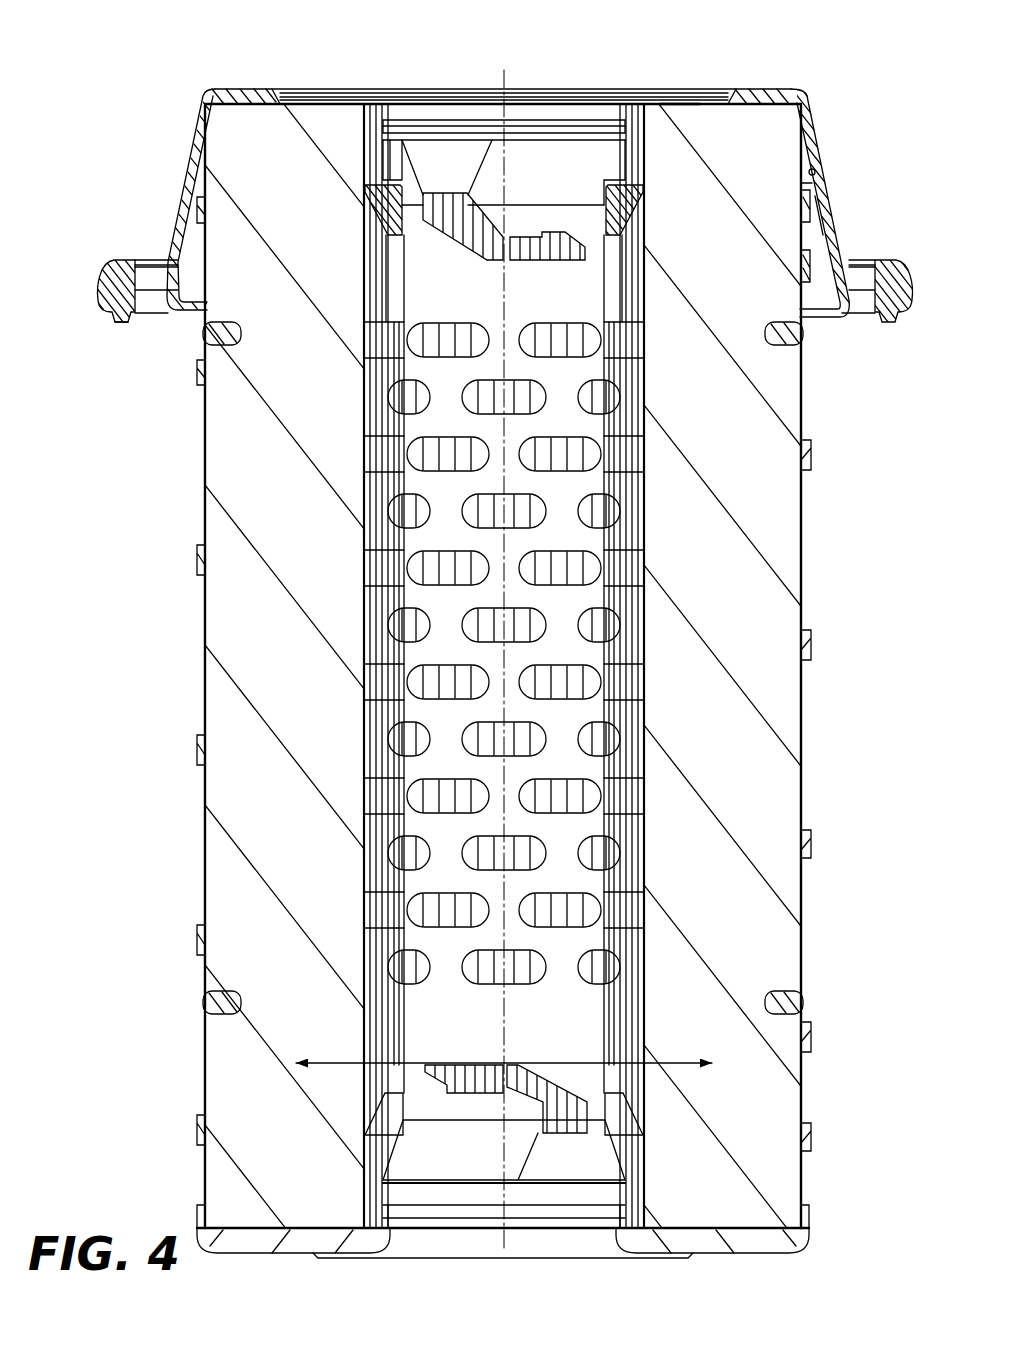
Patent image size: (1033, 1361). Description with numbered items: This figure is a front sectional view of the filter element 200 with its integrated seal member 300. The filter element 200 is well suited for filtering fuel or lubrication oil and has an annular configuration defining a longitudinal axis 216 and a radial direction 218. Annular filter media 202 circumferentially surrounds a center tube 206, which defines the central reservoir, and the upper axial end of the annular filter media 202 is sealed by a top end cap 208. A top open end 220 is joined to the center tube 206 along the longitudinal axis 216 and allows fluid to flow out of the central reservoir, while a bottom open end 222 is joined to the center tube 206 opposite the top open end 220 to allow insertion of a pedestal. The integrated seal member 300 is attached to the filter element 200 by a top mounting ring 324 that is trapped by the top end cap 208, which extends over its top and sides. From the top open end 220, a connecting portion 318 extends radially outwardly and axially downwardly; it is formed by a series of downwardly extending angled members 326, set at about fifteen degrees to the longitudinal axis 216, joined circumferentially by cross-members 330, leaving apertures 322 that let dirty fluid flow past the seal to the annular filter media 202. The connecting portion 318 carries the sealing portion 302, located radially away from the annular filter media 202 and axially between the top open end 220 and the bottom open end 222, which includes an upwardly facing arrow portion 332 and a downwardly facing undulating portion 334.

The filter element 200 is at (551, 56).
The annular filter media 202 is at (702, 785).
The center tube 206 is at (561, 168).
The top end cap 208 is at (668, 92).
The longitudinal axis 216 is at (510, 682).
The radial direction 218 is at (665, 1070).
The top open end 220 is at (466, 94).
The bottom open end 222 is at (566, 1250).
The integrated seal member 300 is at (846, 160).
The sealing portion 302 is at (145, 256).
The connecting portion 318 is at (833, 218).
The apertures 322 is at (811, 170).
The top mounting ring 324 is at (686, 112).
The downwardly extending angled members 326 is at (168, 266).
The cross-members 330 is at (800, 185).
The upwardly facing arrow portion 332 is at (107, 256).
The downwardly facing undulating portion 334 is at (120, 334).